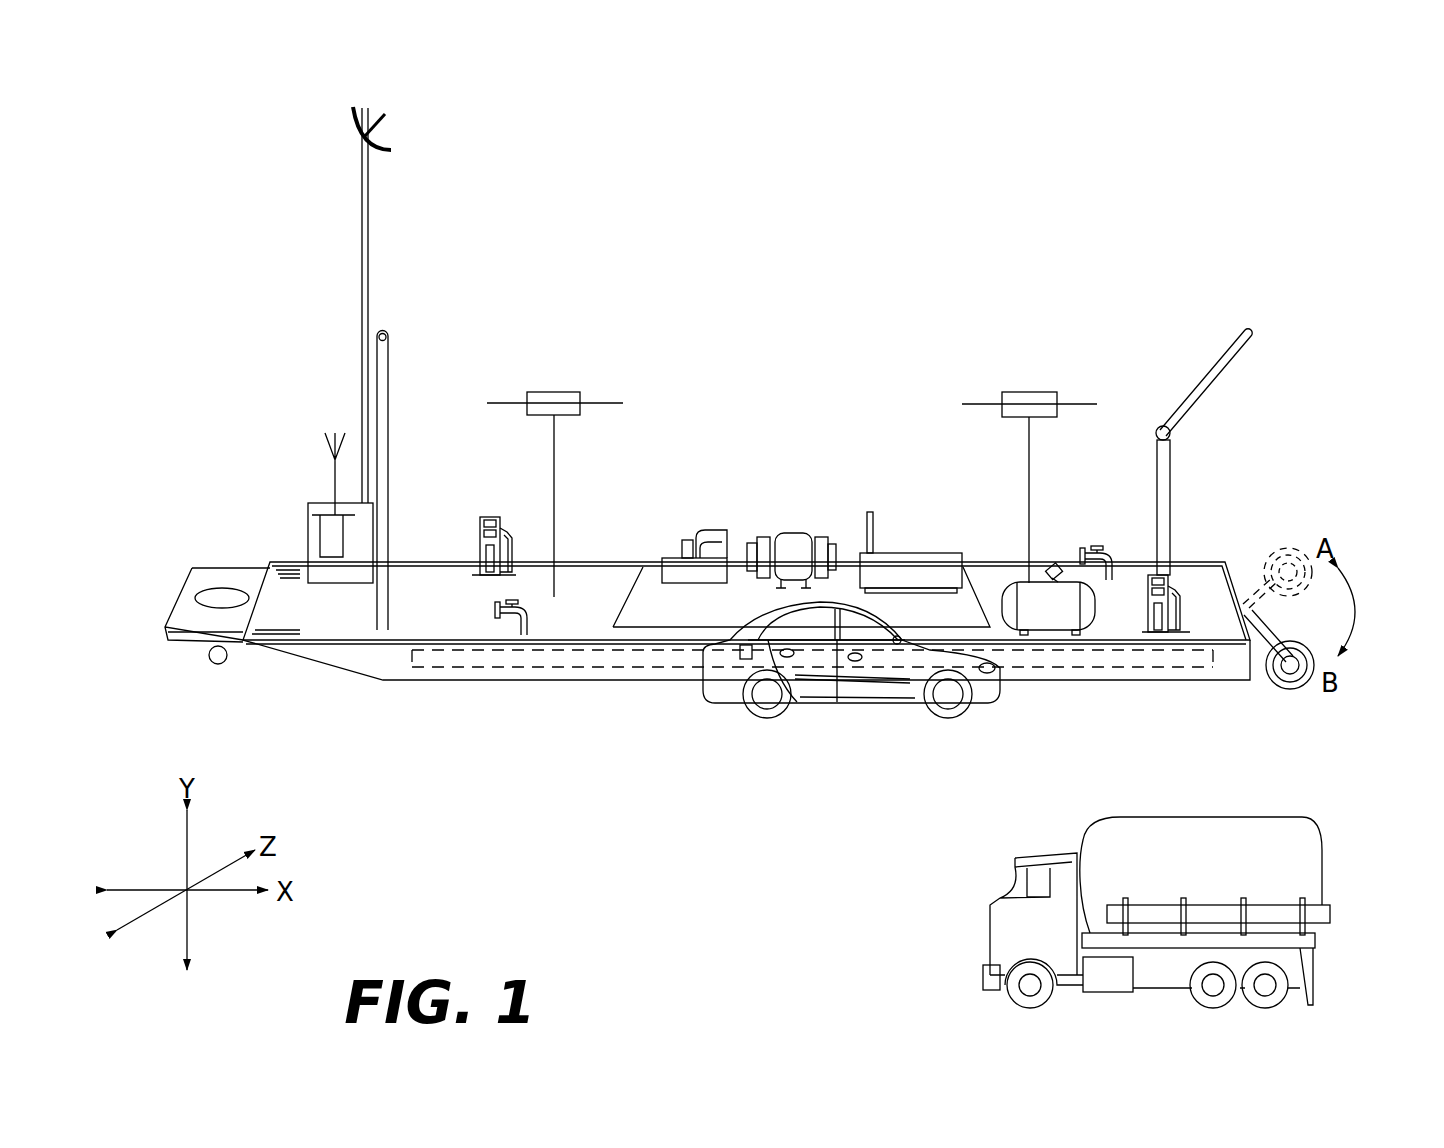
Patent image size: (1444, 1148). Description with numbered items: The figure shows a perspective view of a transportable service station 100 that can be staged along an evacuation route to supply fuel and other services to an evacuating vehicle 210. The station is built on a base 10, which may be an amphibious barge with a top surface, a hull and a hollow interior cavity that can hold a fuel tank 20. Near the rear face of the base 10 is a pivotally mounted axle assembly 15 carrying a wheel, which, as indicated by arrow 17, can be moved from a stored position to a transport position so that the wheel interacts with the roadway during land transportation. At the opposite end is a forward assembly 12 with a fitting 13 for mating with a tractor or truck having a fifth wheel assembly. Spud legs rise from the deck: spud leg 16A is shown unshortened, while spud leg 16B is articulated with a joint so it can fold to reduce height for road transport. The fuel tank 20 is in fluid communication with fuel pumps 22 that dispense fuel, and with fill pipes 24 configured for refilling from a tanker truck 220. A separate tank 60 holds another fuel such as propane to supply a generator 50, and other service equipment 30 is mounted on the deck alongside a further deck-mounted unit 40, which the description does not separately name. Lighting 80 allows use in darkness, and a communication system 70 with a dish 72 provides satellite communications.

The base 10 is at (414, 613).
The forward assembly 12 is at (200, 578).
The fitting 13 is at (216, 665).
The axle assembly 15 is at (1272, 686).
The spud leg 16A is at (403, 410).
The spud leg 16B is at (1255, 377).
The arrow 17 is at (1360, 612).
The fuel tank 20 is at (573, 672).
The fuel pump 22 is at (478, 535).
The fill pipe 24 is at (508, 622).
The equipment 30 is at (722, 515).
The generator 40 is at (815, 520).
The generator 50 is at (925, 540).
The tank 60 is at (1053, 612).
The communication system 70 is at (293, 525).
The dish 72 is at (405, 122).
The lighting 80 is at (628, 383).
The service station 100 is at (746, 699).
The evacuating vehicle 210 is at (718, 702).
The tanker truck 220 is at (975, 888).